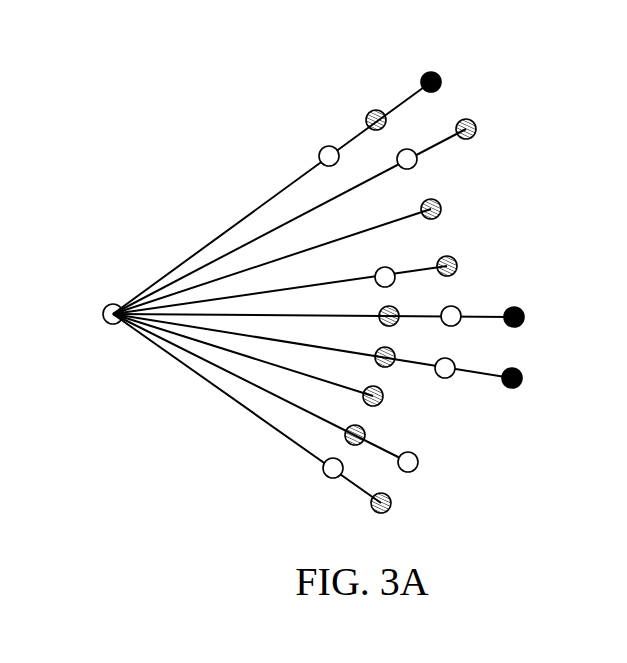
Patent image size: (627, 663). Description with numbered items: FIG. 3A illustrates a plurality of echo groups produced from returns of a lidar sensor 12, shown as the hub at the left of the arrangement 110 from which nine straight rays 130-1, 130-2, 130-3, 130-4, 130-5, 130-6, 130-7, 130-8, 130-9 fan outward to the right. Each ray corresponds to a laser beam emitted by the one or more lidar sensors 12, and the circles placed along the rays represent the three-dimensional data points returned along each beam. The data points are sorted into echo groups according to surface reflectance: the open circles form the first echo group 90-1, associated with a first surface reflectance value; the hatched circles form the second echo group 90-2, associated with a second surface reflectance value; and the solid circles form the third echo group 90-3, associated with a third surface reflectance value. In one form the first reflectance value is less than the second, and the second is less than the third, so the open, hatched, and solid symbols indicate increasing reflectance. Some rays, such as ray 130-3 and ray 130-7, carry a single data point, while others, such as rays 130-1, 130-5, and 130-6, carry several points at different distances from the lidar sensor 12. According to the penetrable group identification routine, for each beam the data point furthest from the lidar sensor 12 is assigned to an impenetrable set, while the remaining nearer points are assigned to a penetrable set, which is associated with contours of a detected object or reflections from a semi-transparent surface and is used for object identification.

The path-finding / trajectory planning tree 110 is at (181, 77).
The lidar sensor 12 is at (103, 313).
The candidate trajectory branch 1 130-1 is at (221, 236).
The candidate trajectory branch 2 130-2 is at (290, 222).
The candidate trajectory branch 3 130-3 is at (197, 286).
The candidate trajectory branch 4 130-4 is at (155, 320).
The candidate trajectory branch 5 130-5 is at (222, 315).
The candidate trajectory branch 6 130-6 is at (268, 338).
The candidate trajectory branch 7 130-7 is at (300, 372).
The candidate trajectory branch 8 130-8 is at (398, 455).
The candidate trajectory branch 9 130-9 is at (365, 496).
The first echo group 90-1 is at (320, 148).
The second echo group 90-2 is at (366, 113).
The third echo group 90-3 is at (421, 77).